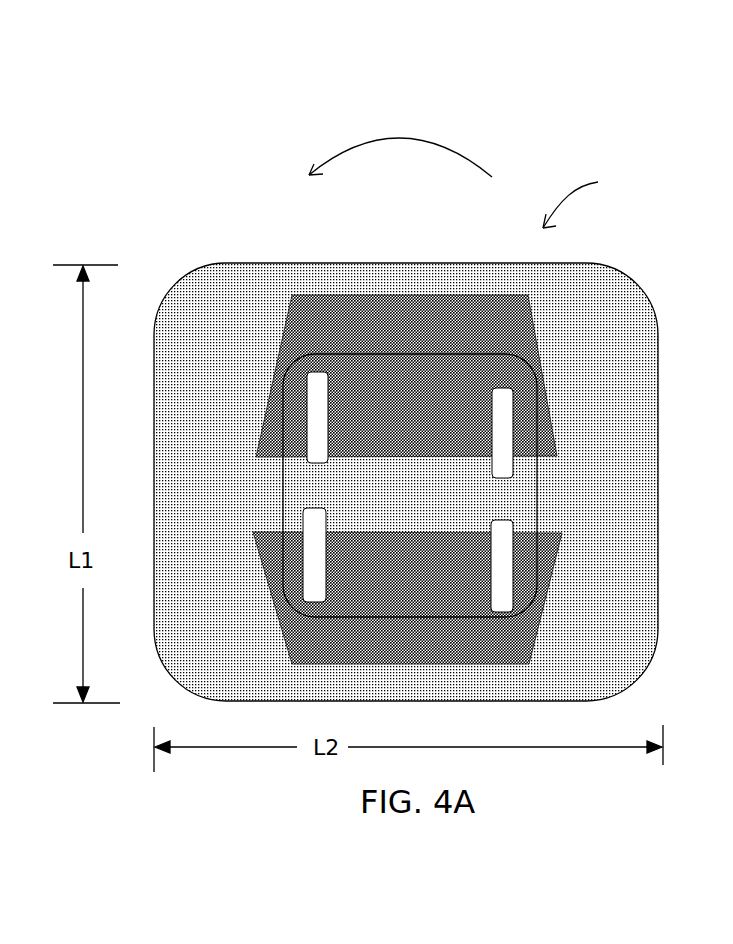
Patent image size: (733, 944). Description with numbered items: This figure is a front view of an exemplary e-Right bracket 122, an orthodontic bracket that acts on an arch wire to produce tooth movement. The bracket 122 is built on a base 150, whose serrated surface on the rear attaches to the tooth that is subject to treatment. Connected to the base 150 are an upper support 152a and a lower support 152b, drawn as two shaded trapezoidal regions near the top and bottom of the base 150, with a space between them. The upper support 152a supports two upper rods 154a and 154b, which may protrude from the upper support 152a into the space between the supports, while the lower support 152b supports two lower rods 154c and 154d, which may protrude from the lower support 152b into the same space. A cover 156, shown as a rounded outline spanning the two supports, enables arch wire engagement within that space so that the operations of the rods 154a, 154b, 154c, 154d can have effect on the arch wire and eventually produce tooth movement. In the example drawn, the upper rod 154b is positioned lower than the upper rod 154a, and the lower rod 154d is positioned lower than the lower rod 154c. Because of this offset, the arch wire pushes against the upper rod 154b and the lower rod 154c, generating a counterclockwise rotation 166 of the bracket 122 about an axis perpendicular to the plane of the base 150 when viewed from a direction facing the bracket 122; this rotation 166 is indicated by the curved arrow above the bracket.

The base 150 is at (648, 297).
The upper support 152a is at (283, 353).
The lower support 152b is at (287, 650).
The upper rod 154a is at (313, 439).
The upper rod 154b is at (510, 428).
The lower rod 154c is at (317, 557).
The lower rod 154d is at (503, 528).
The cover 156 is at (283, 483).
The e-Right bracket 122 is at (596, 200).
The counterclockwise rotation 166 is at (447, 147).